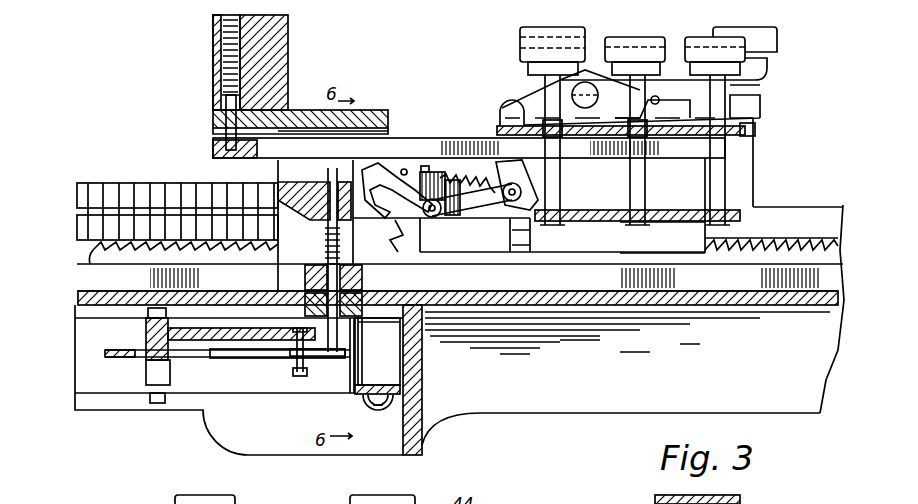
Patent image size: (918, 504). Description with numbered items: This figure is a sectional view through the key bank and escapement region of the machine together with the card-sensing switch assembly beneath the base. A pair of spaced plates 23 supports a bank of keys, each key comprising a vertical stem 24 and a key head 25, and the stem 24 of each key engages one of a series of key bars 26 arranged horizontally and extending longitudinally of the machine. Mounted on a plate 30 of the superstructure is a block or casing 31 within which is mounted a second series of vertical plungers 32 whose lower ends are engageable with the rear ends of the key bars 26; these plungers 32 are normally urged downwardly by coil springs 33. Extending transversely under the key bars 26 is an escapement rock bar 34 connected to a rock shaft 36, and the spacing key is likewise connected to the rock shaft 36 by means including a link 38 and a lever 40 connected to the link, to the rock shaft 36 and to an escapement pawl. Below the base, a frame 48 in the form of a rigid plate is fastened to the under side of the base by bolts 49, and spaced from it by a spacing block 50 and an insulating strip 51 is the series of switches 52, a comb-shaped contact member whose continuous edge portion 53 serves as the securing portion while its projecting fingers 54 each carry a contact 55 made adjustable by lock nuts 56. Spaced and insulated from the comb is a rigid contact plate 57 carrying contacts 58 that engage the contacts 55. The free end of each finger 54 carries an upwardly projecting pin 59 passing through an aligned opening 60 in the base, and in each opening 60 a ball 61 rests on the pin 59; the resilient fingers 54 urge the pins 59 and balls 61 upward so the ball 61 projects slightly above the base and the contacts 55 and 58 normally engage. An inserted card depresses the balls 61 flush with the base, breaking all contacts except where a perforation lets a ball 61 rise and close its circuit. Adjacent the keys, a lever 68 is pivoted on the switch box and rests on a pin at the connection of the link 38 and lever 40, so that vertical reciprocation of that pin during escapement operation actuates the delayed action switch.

The spaced plates 23 is at (745, 128).
The vertical stem 24 is at (733, 103).
The key head 25 is at (703, 45).
The key bars 26 is at (726, 149).
The plate 30 is at (355, 110).
The block or casing 31 is at (290, 45).
The vertical plungers 32 is at (222, 70).
The coil springs 33 is at (233, 42).
The escapement rock bar 34 is at (378, 165).
The rock shaft 36 is at (434, 217).
The link 38 is at (505, 170).
The lever 40 is at (490, 210).
The frame 48 is at (459, 286).
The bolts 49 is at (383, 410).
The spacing block 50 is at (150, 378).
The insulating strip 51 is at (148, 386).
The contact switches 52 is at (288, 360).
The edge portion 53 is at (166, 350).
The projecting fingers 54 is at (252, 350).
The contact 55 is at (310, 363).
The lock nuts 56 is at (303, 352).
The rigid contact plate 57 is at (160, 330).
The contacts 58 is at (333, 340).
The stud or pin 59 is at (387, 291).
The opening 60 is at (312, 292).
The ball 61 is at (340, 265).
The lever 68 is at (525, 198).